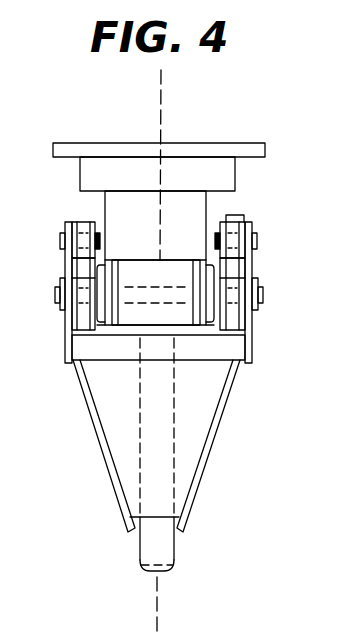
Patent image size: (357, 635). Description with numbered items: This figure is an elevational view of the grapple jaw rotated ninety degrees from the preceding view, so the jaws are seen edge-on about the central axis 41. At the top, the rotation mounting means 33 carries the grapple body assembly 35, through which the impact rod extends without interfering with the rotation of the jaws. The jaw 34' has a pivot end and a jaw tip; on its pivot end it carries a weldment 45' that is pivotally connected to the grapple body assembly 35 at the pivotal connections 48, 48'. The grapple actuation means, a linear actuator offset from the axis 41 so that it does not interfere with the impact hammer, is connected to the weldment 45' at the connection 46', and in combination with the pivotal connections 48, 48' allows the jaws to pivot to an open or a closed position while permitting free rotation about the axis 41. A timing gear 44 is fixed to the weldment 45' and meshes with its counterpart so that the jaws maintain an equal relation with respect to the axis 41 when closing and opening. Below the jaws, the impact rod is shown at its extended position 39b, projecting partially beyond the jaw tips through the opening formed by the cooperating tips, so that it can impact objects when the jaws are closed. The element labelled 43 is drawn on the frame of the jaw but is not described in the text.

The rotation mounting means 33 is at (86, 203).
The jaw 34' is at (91, 446).
The grapple body assembly 35 is at (211, 208).
The extended position of impact rod 39b is at (167, 547).
The axis 41 is at (160, 113).
The frame 43 is at (231, 454).
The timing gear 44 is at (236, 216).
The weldment 45' is at (163, 318).
The actuator connection 46' is at (173, 242).
The pivotal connection 48 is at (280, 296).
The pivotal connection 48' is at (47, 295).